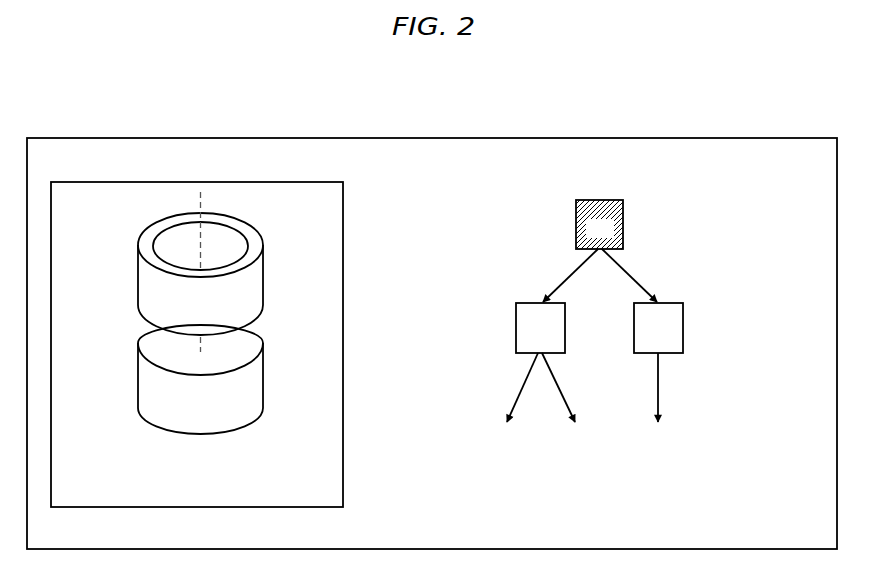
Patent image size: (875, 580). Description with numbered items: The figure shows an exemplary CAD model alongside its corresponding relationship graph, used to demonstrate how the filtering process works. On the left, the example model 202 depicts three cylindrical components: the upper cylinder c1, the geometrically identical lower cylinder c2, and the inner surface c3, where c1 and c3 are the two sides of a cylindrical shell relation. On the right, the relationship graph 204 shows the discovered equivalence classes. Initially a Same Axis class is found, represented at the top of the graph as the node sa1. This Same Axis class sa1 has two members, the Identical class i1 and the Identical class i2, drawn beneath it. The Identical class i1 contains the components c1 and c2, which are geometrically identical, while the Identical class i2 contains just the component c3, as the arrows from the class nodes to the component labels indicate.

The example model 202 is at (252, 215).
The relationship graph 204 is at (610, 188).
The cylindrical component c1 is at (160, 293).
The cylindrical component c2 is at (163, 398).
The cylindrical shell side c3 is at (220, 246).
The Same Axis class sa1 is at (599, 224).
The Identical class i1 is at (540, 328).
The Identical class i2 is at (658, 328).